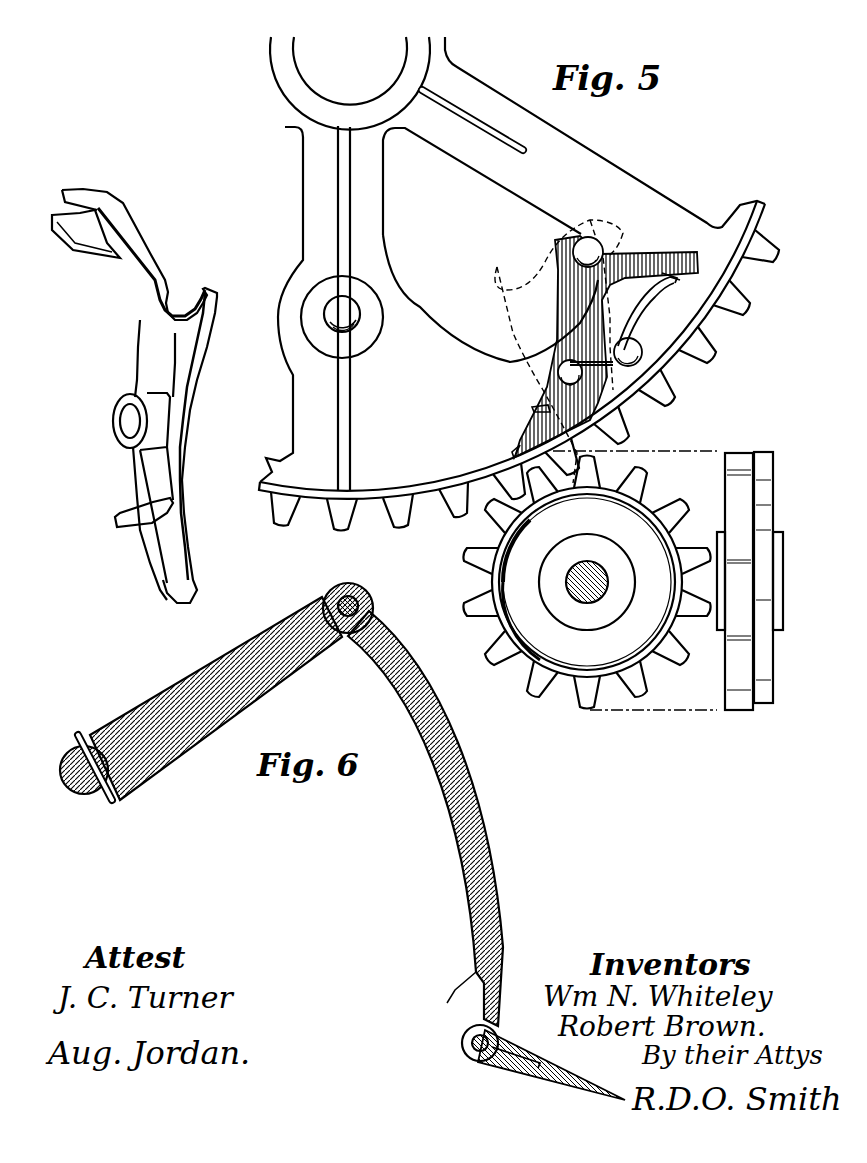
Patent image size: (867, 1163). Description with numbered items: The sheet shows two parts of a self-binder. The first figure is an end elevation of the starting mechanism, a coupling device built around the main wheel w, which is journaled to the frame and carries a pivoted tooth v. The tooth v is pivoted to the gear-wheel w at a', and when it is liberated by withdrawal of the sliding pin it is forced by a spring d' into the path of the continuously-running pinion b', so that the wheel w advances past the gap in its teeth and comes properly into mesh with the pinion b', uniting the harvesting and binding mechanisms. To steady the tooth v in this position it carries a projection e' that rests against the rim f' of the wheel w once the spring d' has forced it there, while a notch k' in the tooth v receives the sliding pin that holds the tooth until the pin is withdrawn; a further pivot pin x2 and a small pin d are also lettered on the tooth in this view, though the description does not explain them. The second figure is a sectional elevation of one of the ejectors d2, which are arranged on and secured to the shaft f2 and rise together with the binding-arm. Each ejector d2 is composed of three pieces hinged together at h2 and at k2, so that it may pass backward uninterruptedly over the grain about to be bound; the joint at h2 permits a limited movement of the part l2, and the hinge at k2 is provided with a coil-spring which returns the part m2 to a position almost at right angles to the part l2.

In FIG. 5, the main wheel w is at (519, 284).
In FIG. 5, the pivoted tooth v is at (450, 402).
In FIG. 5, the pivot pin x2 is at (588, 252).
In FIG. 5, the spring d' is at (646, 319).
In FIG. 5, the pin d is at (585, 372).
In FIG. 5, the projection e' is at (332, 463).
In FIG. 5, the rim f' is at (499, 452).
In FIG. 5, the pinion b' is at (623, 564).
In FIG. 5, the notch k' is at (134, 396).
In FIG. 5, the pivot of tooth a' is at (119, 421).
In FIG. 6, the ejector d2 is at (216, 698).
In FIG. 6, the shaft f2 is at (80, 790).
In FIG. 6, the hinge joint h2 is at (351, 599).
In FIG. 6, the ejector part l2 is at (425, 818).
In FIG. 6, the hinge joint k2 is at (490, 1040).
In FIG. 6, the ejector end part m2 is at (551, 1065).